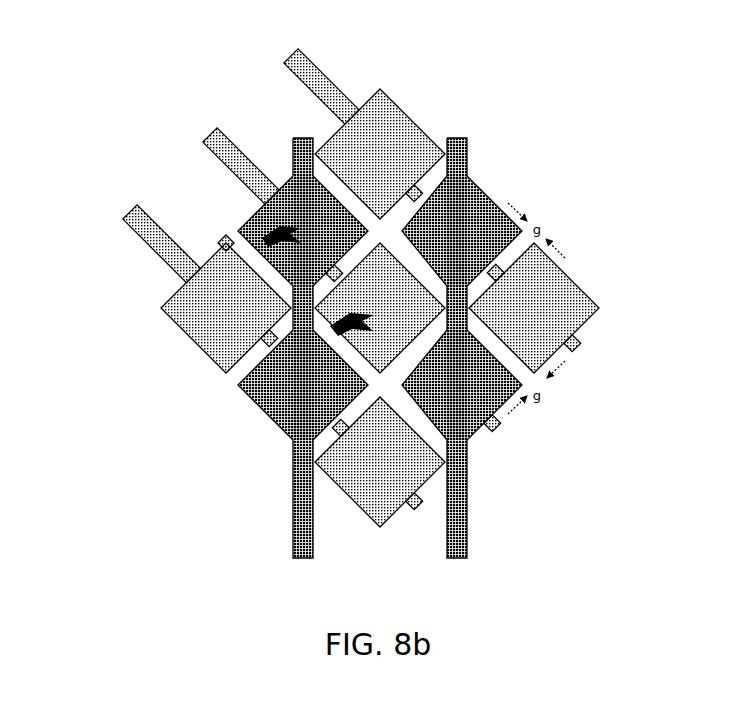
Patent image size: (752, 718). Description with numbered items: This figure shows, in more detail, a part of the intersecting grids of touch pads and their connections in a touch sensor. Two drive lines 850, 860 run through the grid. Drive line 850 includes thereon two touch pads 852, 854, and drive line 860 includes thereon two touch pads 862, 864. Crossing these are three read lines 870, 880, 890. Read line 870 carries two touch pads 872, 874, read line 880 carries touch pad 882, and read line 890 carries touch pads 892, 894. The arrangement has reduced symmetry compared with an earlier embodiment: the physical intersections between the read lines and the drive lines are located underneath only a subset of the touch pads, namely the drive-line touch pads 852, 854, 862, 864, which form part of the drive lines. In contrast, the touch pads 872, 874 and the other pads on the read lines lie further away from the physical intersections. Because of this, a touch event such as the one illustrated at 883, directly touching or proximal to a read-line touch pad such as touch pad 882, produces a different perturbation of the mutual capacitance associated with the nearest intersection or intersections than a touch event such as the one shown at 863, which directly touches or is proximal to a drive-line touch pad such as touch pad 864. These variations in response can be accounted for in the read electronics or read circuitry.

The drive line 850 is at (458, 560).
The drive line 860 is at (302, 560).
The touch pad 852 is at (478, 444).
The touch pad 854 is at (476, 181).
The touch pad 862 is at (280, 434).
The touch pad 864 is at (292, 178).
The touch event 863 is at (240, 223).
The touch event 883 is at (338, 350).
The read line 870 is at (125, 208).
The read line 880 is at (204, 131).
The read line 890 is at (283, 50).
The touch pad 872 is at (350, 509).
The touch pad 874 is at (173, 320).
The touch pad 882 is at (260, 415).
The touch pad 892 is at (574, 272).
The touch pad 894 is at (413, 114).